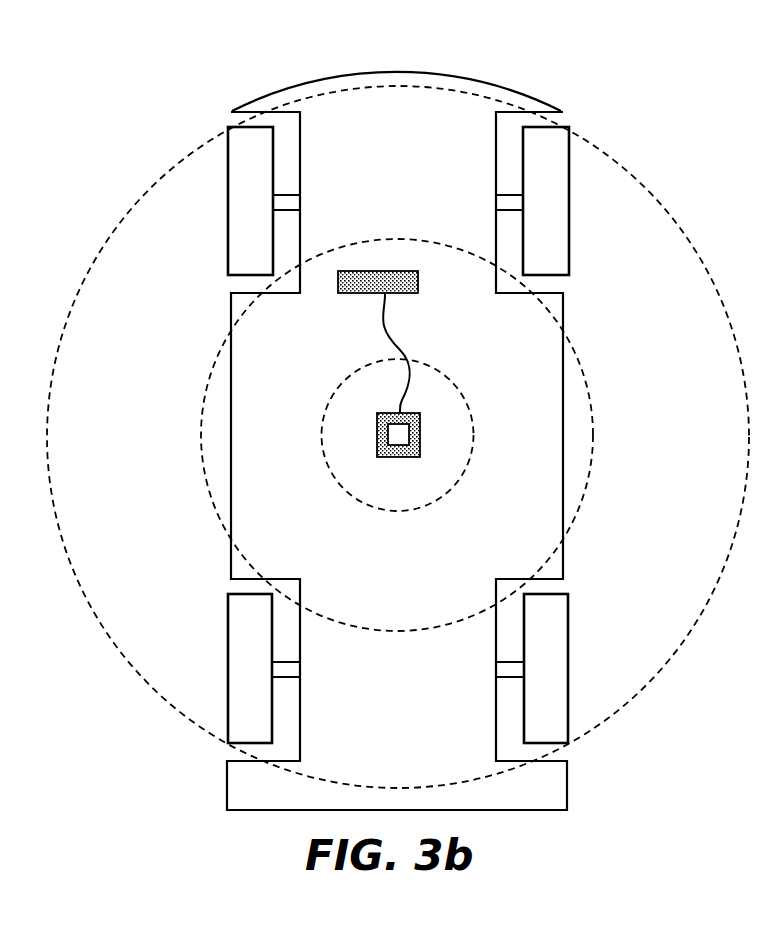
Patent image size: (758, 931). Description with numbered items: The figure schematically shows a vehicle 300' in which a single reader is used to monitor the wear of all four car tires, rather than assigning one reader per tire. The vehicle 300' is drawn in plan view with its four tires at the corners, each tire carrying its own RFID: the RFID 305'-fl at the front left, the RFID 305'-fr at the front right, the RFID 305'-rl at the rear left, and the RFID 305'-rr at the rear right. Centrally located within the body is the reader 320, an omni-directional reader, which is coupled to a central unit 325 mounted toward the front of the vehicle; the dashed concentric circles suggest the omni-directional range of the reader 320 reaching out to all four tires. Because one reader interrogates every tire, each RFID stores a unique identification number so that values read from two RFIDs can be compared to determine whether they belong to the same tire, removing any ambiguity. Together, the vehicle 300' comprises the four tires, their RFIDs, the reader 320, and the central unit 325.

The vehicle 300' is at (397, 412).
The RFID 305'-fl is at (207, 201).
The RFID 305'-fr is at (590, 201).
The RFID 305'-rl is at (205, 668).
The RFID 305'-rr is at (591, 668).
The central unit 325 is at (409, 294).
The reader 320 is at (409, 457).